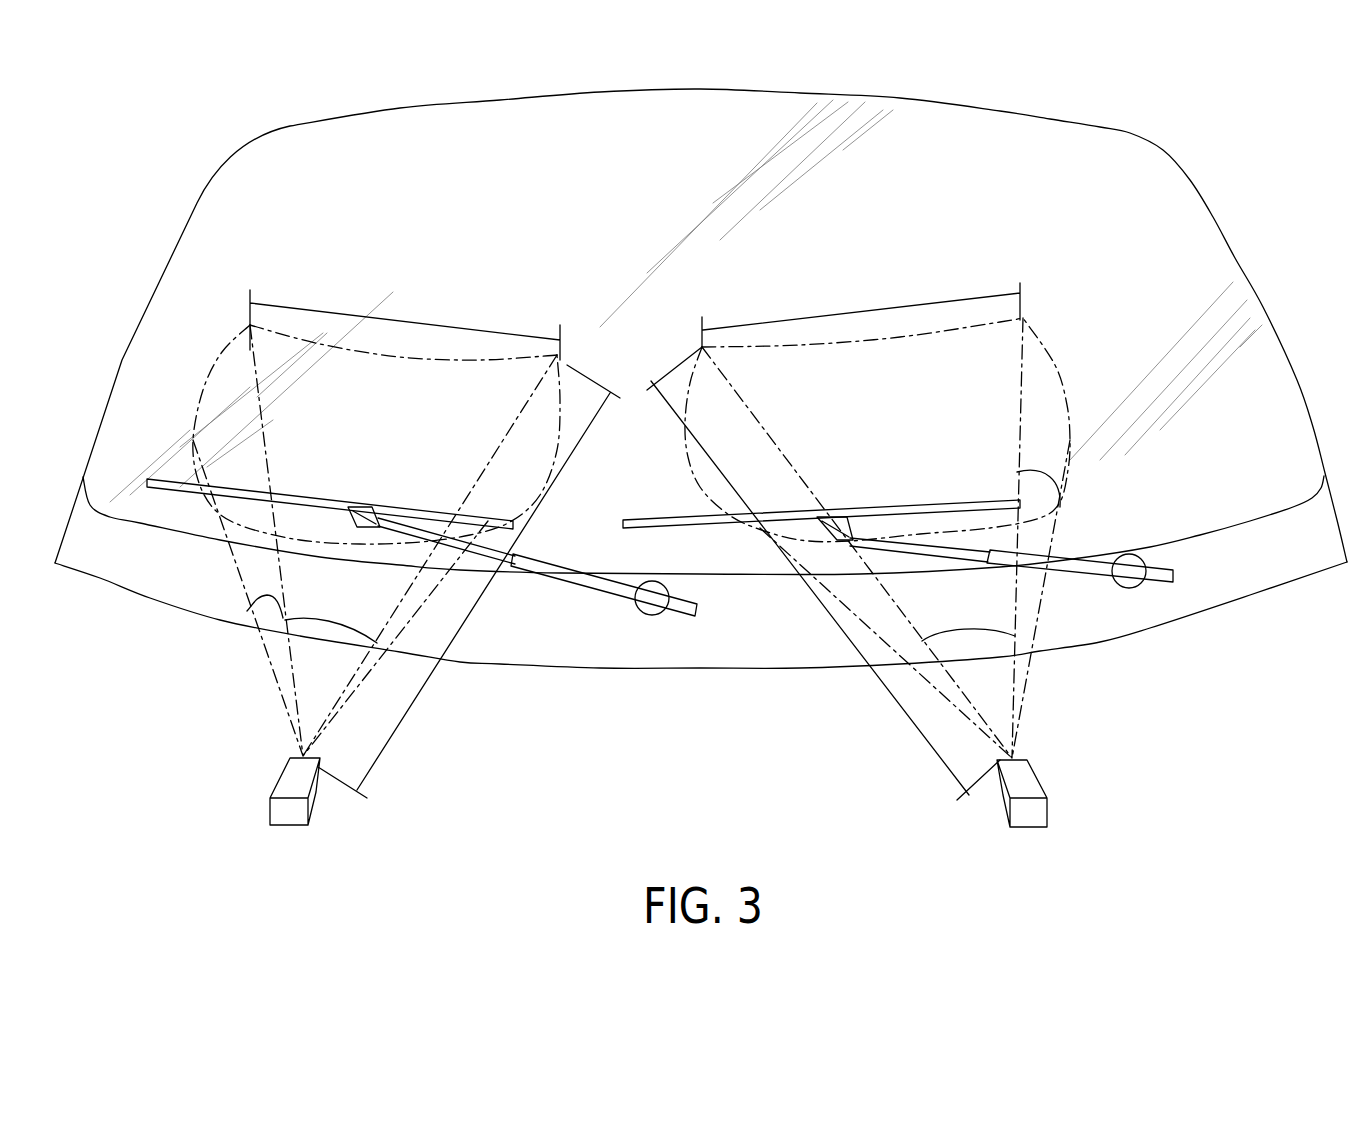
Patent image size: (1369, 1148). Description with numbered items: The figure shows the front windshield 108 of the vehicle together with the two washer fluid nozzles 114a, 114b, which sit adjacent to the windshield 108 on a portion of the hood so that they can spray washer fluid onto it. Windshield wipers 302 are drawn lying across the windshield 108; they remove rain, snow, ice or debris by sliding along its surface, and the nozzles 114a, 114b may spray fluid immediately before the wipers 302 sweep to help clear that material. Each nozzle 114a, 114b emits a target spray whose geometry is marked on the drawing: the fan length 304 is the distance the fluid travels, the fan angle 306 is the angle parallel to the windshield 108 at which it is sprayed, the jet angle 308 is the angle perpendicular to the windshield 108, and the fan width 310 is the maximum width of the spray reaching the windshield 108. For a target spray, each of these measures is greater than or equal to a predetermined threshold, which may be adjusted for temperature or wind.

The windshield 108 is at (340, 173).
The nozzle 114a is at (1027, 806).
The nozzle 114b is at (288, 808).
The windshield wipers 302 is at (590, 582).
The fan length 304 is at (400, 723).
The fan angle 306 is at (342, 627).
The jet angle 308 is at (260, 597).
The fan width 310 is at (453, 327).